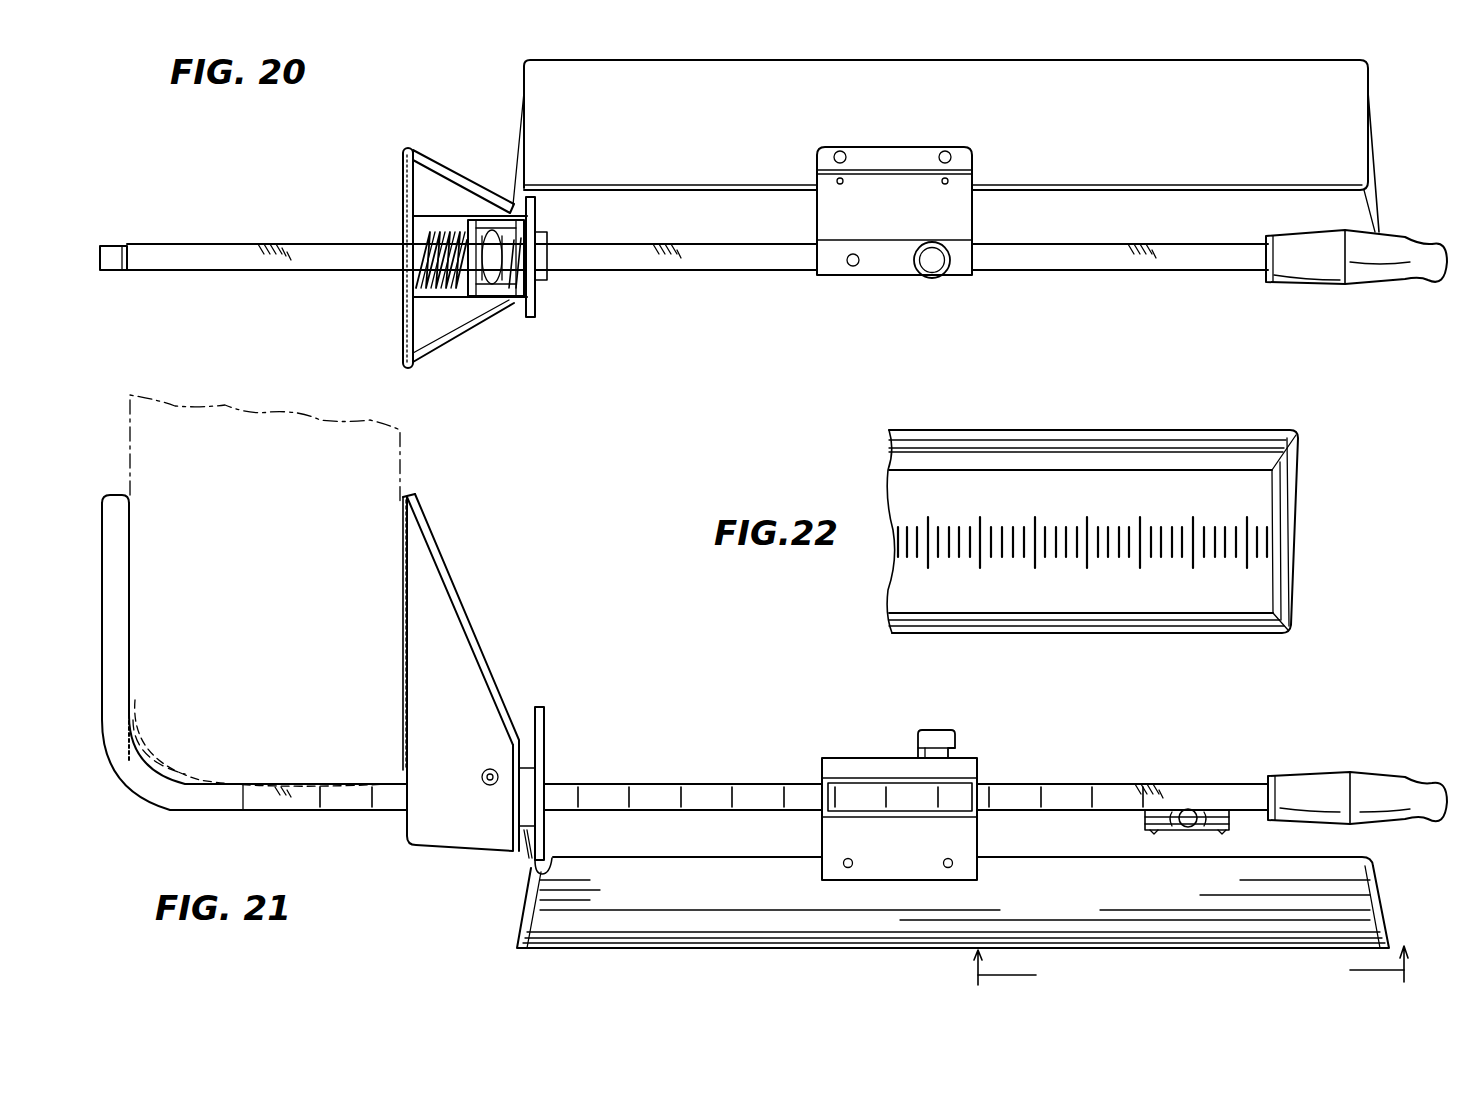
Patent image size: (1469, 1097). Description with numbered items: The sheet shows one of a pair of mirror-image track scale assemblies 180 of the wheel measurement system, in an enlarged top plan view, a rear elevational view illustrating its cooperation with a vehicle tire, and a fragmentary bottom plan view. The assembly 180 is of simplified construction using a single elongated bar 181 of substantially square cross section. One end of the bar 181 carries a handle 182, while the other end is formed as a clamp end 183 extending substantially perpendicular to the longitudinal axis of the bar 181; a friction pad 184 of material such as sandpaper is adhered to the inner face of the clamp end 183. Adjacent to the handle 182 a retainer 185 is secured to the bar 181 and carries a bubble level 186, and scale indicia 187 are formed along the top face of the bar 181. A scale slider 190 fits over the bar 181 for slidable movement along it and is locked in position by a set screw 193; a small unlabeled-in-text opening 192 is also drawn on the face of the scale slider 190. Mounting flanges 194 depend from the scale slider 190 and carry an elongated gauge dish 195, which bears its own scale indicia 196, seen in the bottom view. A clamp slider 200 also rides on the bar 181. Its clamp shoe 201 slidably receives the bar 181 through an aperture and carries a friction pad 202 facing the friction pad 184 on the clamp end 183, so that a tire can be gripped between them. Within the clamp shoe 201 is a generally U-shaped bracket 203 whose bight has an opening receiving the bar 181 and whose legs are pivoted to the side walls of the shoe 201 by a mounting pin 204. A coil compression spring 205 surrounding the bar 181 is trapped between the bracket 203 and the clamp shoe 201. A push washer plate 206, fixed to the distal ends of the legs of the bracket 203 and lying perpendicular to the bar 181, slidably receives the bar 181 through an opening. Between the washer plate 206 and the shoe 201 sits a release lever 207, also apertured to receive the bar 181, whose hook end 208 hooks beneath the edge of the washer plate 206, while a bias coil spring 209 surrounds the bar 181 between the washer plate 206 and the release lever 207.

In FIG. 20, the track scale assembly 180 is at (464, 93).
In FIG. 21, the track scale assembly 180 is at (1143, 725).
In FIG. 20, the elongated bar 181 is at (1104, 256).
In FIG. 21, the elongated bar 181 is at (1213, 790).
In FIG. 20, the handle 182 is at (1327, 272).
In FIG. 21, the handle 182 is at (1365, 778).
In FIG. 20, the clamp end 183 is at (113, 273).
In FIG. 21, the clamp end 183 is at (102, 614).
In FIG. 20, the friction pad 184 is at (136, 252).
In FIG. 21, the friction pad 184 is at (128, 564).
In FIG. 21, the retainer 185 is at (1230, 824).
In FIG. 21, the bubble level 186 is at (1190, 826).
In FIG. 21, the scale indicia 187 is at (690, 795).
In FIG. 20, the scale slider 190 is at (845, 283).
In FIG. 21, the scale slider 190 is at (833, 755).
In FIG. 20, the hole 192 is at (846, 265).
In FIG. 20, the set screw 193 is at (936, 263).
In FIG. 21, the set screw 193 is at (958, 733).
In FIG. 20, the mounting flanges 194 is at (820, 160).
In FIG. 21, the mounting flanges 194 is at (843, 832).
In FIG. 20, the gauge dish 195 is at (1295, 70).
In FIG. 21, the gauge dish 195 is at (1364, 908).
In FIG. 22, the gauge dish 195 is at (1103, 432).
In FIG. 22, the scale indicia 196 is at (968, 560).
In FIG. 20, the clamp slider 200 is at (392, 190).
In FIG. 21, the clamp slider 200 is at (422, 850).
In FIG. 20, the clamp shoe 201 is at (448, 160).
In FIG. 21, the clamp shoe 201 is at (468, 680).
In FIG. 20, the friction pad 202 is at (404, 277).
In FIG. 21, the friction pad 202 is at (412, 548).
In FIG. 20, the U-shaped bracket 203 is at (490, 310).
In FIG. 20, the mounting pin 204 is at (474, 222).
In FIG. 20, the coil compression spring 205 is at (447, 292).
In FIG. 20, the push washer plate 206 is at (540, 300).
In FIG. 21, the push washer plate 206 is at (546, 731).
In FIG. 20, the release lever 207 is at (497, 240).
In FIG. 21, the release lever 207 is at (526, 852).
In FIG. 20, the hook end 208 is at (548, 272).
In FIG. 21, the hook end 208 is at (551, 852).
In FIG. 20, the bias coil spring 209 is at (520, 264).